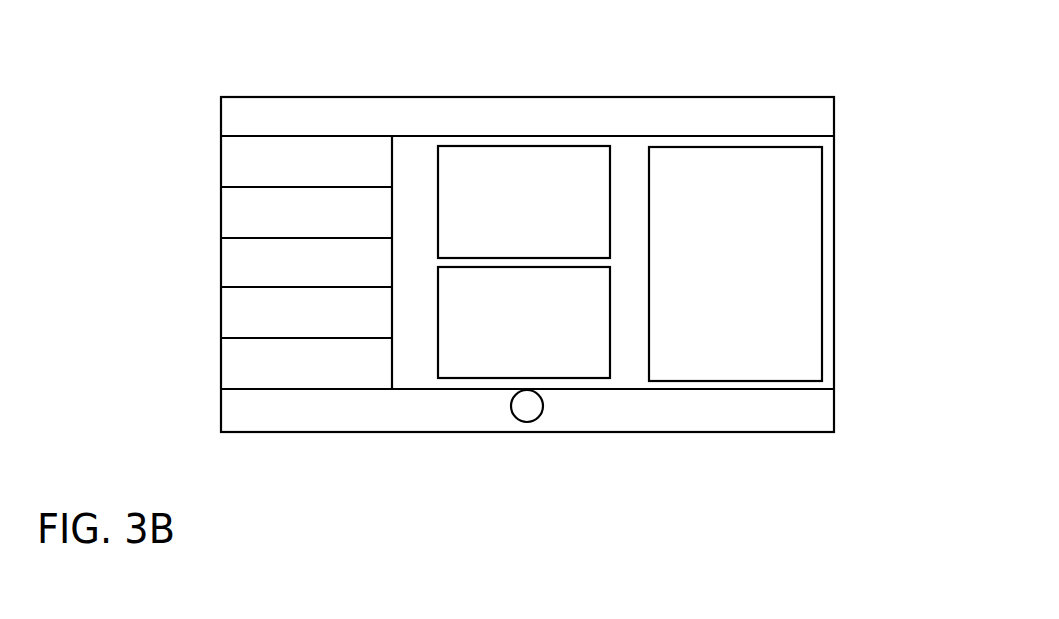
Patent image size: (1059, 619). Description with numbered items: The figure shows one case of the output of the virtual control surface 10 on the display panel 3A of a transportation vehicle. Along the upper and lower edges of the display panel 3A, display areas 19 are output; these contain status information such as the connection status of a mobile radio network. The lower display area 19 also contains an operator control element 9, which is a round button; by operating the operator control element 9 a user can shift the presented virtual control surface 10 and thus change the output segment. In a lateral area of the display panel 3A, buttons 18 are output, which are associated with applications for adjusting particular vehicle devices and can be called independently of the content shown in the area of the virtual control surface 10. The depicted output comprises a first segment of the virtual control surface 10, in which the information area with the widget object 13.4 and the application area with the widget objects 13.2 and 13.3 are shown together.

The display panel 3A is at (838, 80).
The operator control element 9 is at (530, 417).
The virtual control surface 10 is at (829, 148).
The widget object 13.2 is at (497, 218).
The widget object 13.3 is at (497, 337).
The widget object 13.4 is at (709, 282).
The buttons 18 is at (268, 162).
The display areas 19 is at (744, 117).